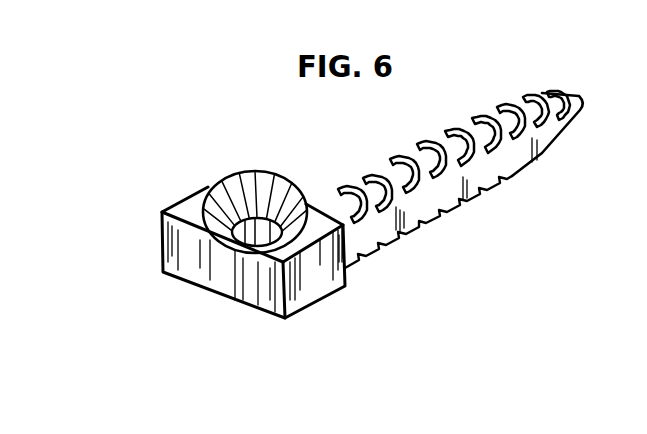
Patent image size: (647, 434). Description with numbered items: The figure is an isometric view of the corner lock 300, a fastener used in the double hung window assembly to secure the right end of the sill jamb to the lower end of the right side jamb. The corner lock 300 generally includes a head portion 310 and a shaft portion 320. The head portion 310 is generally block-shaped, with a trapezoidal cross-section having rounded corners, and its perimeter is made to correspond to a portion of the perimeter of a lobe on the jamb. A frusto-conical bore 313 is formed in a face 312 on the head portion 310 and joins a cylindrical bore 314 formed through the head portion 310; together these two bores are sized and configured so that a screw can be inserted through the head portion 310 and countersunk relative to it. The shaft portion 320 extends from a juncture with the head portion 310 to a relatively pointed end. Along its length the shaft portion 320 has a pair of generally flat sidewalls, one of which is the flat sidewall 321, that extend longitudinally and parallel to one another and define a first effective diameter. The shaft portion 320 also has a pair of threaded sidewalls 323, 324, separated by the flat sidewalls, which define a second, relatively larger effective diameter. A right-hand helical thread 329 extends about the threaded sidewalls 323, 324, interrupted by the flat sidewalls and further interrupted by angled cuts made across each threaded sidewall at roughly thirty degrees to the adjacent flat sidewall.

The corner lock 300 is at (322, 129).
The head portion 310 is at (302, 319).
The face 312 is at (187, 203).
The frusto-conical bore 313 is at (237, 198).
The cylindrical bore 314 is at (263, 230).
The shaft portion 320 is at (583, 86).
The flat sidewall 321 is at (545, 138).
The threaded sidewall 323 is at (507, 97).
The threaded sidewall 324 is at (455, 205).
The helical thread 329 is at (463, 131).